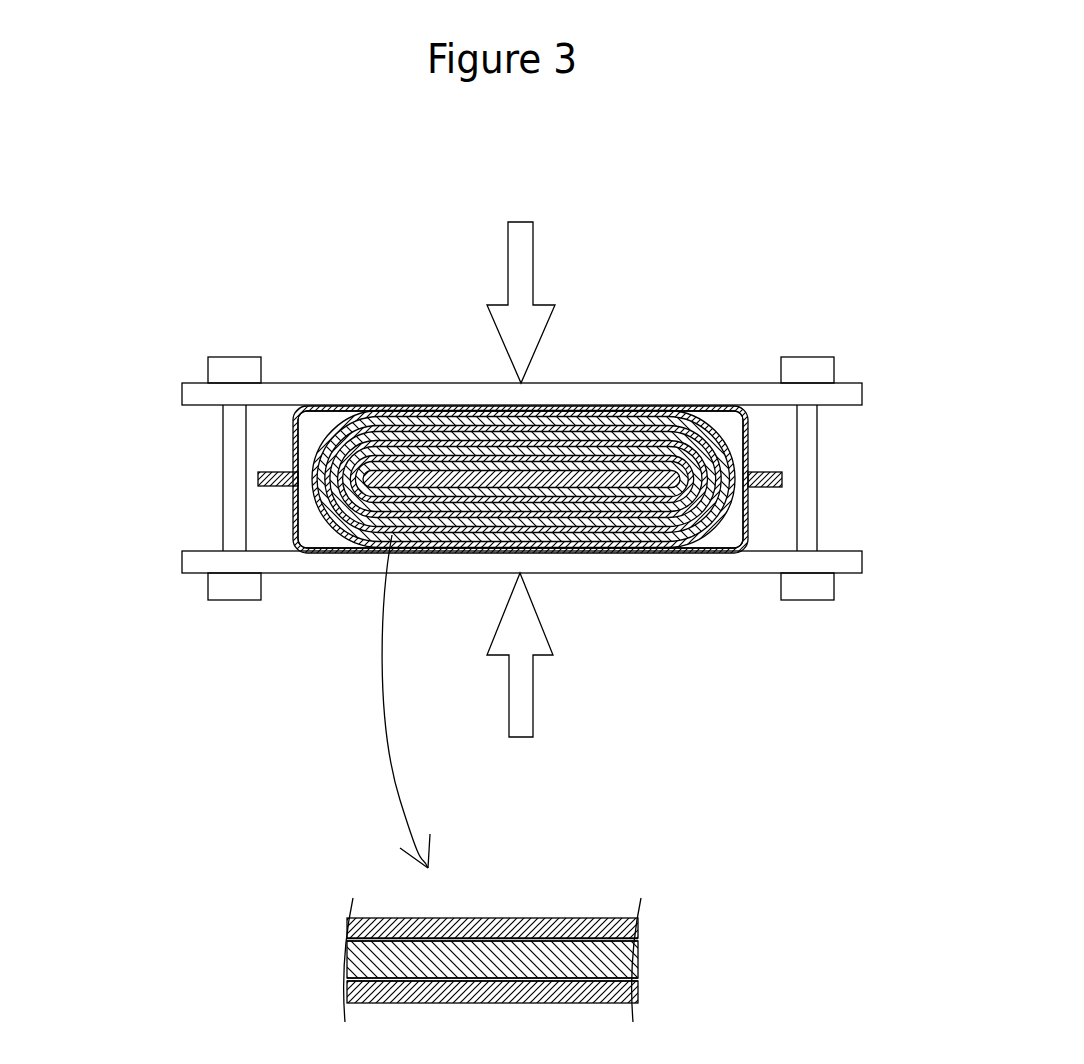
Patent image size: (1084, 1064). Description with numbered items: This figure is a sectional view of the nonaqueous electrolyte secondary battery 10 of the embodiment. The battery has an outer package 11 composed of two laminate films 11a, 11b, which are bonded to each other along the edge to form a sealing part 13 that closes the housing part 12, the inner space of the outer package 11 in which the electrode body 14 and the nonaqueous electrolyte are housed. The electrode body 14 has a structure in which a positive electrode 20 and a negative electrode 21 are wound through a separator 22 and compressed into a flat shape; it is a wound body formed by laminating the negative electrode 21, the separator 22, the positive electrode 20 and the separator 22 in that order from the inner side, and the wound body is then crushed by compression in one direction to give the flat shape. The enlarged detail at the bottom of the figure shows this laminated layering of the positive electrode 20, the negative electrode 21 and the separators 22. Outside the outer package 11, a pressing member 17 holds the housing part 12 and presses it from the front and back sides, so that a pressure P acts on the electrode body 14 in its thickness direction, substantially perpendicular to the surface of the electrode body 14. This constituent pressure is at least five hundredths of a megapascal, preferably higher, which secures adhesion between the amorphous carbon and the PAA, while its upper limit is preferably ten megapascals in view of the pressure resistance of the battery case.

The nonaqueous electrolyte secondary battery 10 is at (499, 479).
The outer package 11 is at (404, 479).
The laminate film 11a is at (297, 443).
The laminate film 11b is at (297, 515).
The housing part 12 is at (667, 553).
The sealing part 13 is at (782, 488).
The electrode body 14 is at (342, 524).
The pressing member 17 is at (868, 561).
The positive electrode 20 is at (385, 412).
The negative electrode 21 is at (438, 413).
The separator 22 is at (347, 940).